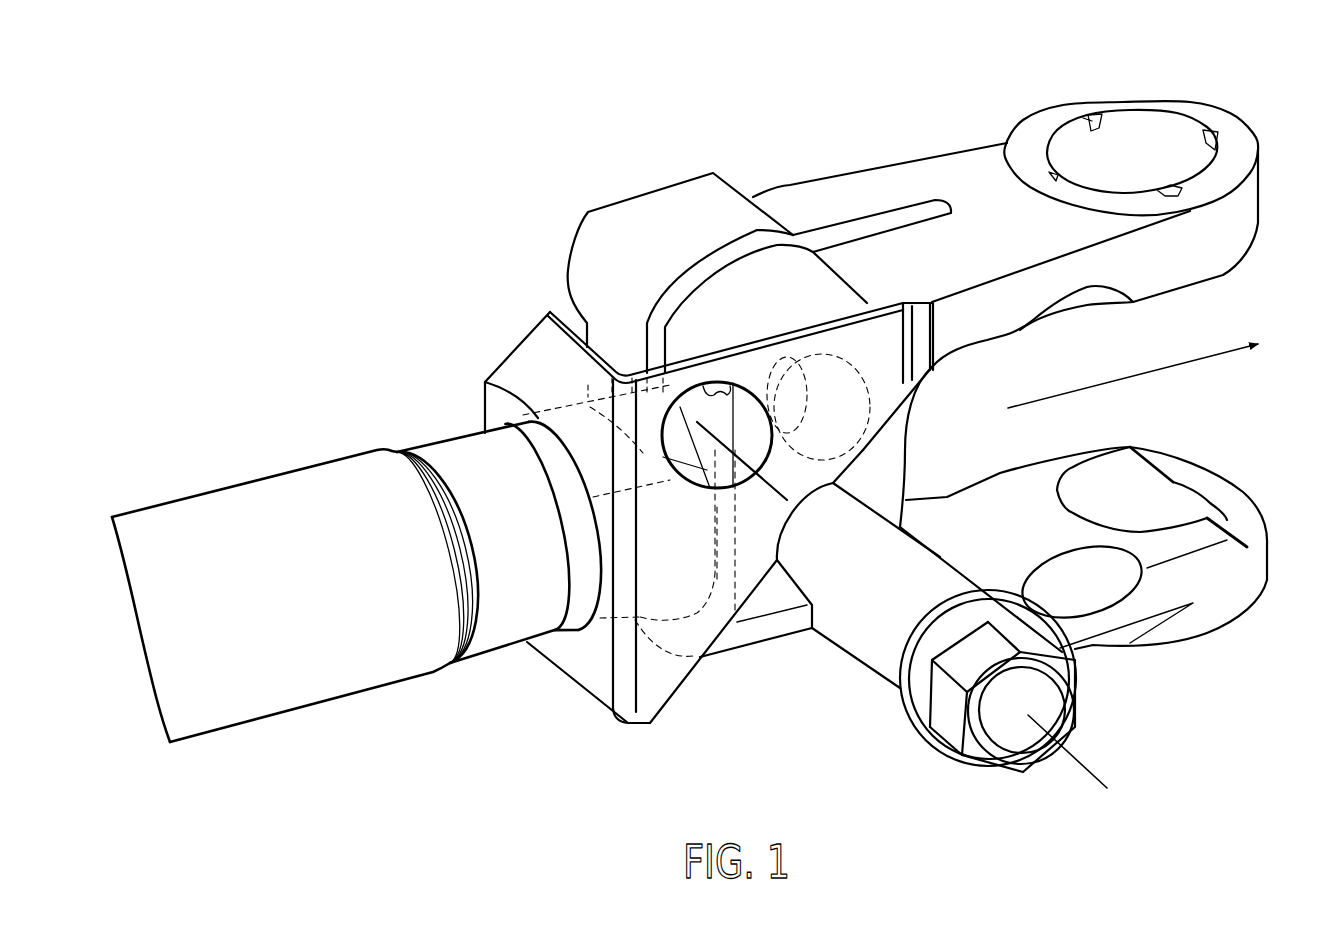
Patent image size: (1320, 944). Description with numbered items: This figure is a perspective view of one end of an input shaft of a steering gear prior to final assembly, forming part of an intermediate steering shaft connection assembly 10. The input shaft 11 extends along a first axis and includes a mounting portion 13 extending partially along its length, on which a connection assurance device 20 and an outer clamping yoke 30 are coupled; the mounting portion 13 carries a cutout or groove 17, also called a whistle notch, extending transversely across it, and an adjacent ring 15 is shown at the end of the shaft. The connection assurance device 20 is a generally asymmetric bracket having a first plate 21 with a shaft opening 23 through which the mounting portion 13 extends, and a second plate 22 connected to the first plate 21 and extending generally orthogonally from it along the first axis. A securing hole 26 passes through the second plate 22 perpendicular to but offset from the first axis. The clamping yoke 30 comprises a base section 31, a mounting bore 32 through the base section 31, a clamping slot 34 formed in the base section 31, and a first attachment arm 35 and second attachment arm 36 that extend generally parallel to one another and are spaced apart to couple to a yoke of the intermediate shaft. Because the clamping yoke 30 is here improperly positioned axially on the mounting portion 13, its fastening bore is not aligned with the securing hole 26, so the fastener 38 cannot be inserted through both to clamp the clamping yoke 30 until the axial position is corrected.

The intermediate steering shaft connection assembly 10 is at (901, 83).
The input shaft 11 is at (386, 408).
The mounting portion 13 is at (583, 600).
The ring collar 15 is at (454, 450).
The groove 17 is at (680, 443).
The connection assurance device 20 is at (505, 333).
The first plate 21 is at (600, 683).
The second plate 22 is at (713, 616).
The shaft opening 23 is at (485, 392).
The securing hole 26 is at (700, 396).
The clamping yoke 30 is at (697, 152).
The base section 31 is at (637, 207).
The mounting bore 32 is at (703, 457).
The clamping slot 34 is at (722, 256).
The first attachment arm 35 is at (1002, 150).
The second attachment arm 36 is at (1200, 623).
The fastener 38 is at (982, 767).